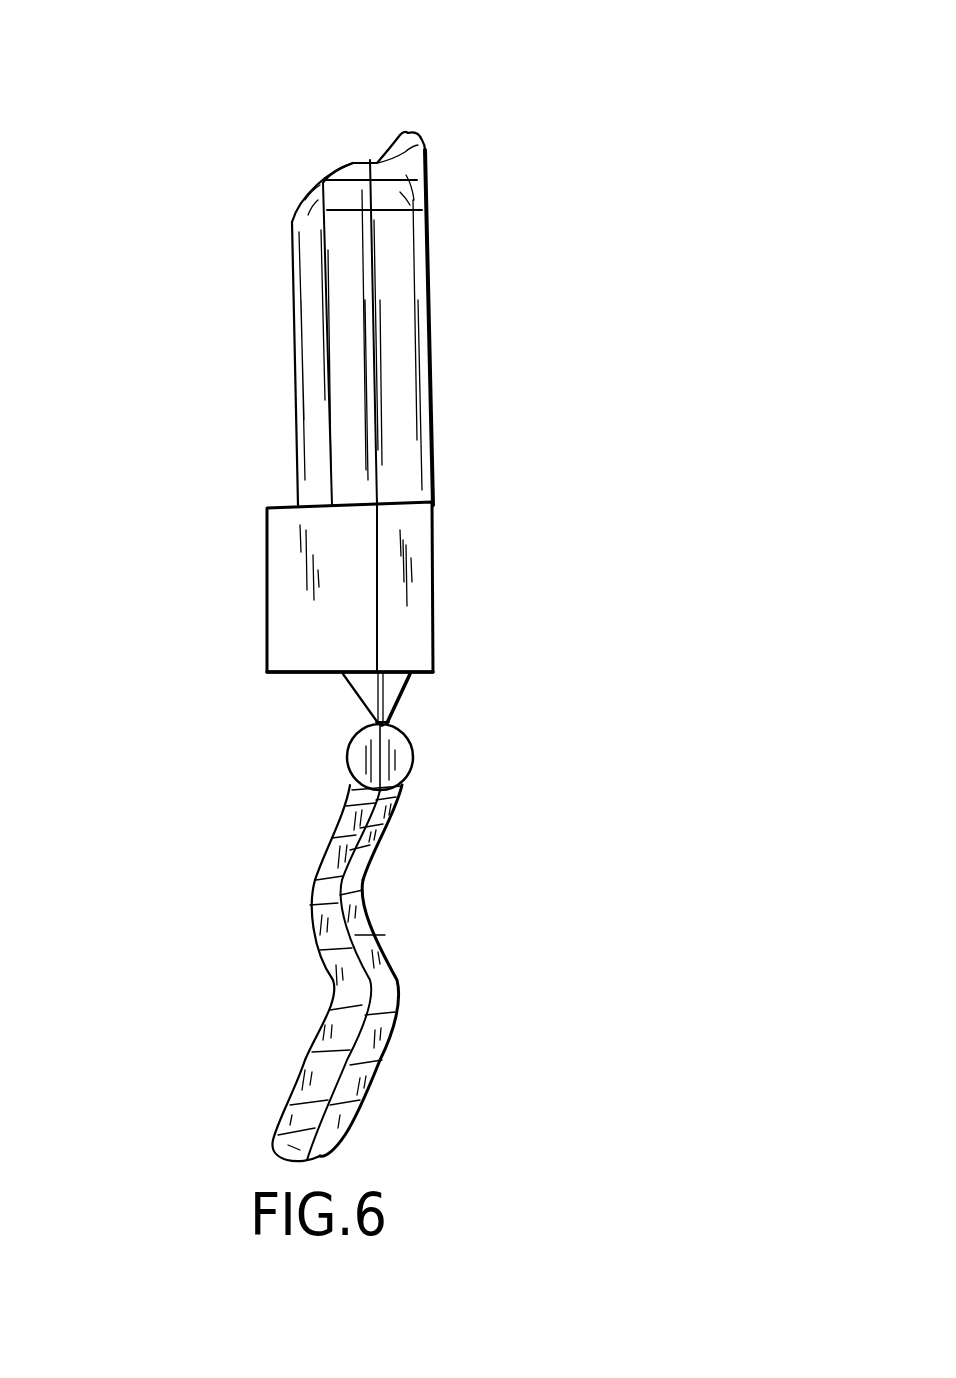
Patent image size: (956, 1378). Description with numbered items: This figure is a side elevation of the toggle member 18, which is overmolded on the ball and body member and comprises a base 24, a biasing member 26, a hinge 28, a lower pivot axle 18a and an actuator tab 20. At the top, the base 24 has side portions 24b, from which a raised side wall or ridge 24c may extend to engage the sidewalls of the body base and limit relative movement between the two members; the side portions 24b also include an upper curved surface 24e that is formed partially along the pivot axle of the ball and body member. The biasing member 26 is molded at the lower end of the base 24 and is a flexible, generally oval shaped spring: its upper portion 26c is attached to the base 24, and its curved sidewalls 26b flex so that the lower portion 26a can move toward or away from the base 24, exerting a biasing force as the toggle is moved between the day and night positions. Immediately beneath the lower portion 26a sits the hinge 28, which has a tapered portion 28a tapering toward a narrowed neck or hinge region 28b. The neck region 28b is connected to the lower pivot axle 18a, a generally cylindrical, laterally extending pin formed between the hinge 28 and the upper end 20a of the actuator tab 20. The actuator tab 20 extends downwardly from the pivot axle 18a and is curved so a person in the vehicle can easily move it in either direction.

The toggle member 18 is at (126, 110).
The lower pivot axle 18a is at (413, 760).
The actuator tab 20 is at (383, 958).
The upper end of actuating tab 20a is at (397, 823).
The base 24 is at (400, 375).
The side portions 24b is at (395, 283).
The raised side wall or ridge 24c is at (310, 305).
The upper curved surface 24e is at (380, 162).
The biasing member 26 is at (420, 605).
The lower portion of biasing member 26a is at (302, 658).
The curved sidewalls 26b is at (282, 568).
The upper portion of biasing member 26c is at (377, 502).
The hinge 28 is at (378, 720).
The tapered portion 28a is at (400, 694).
The neck or hinge region 28b is at (385, 722).